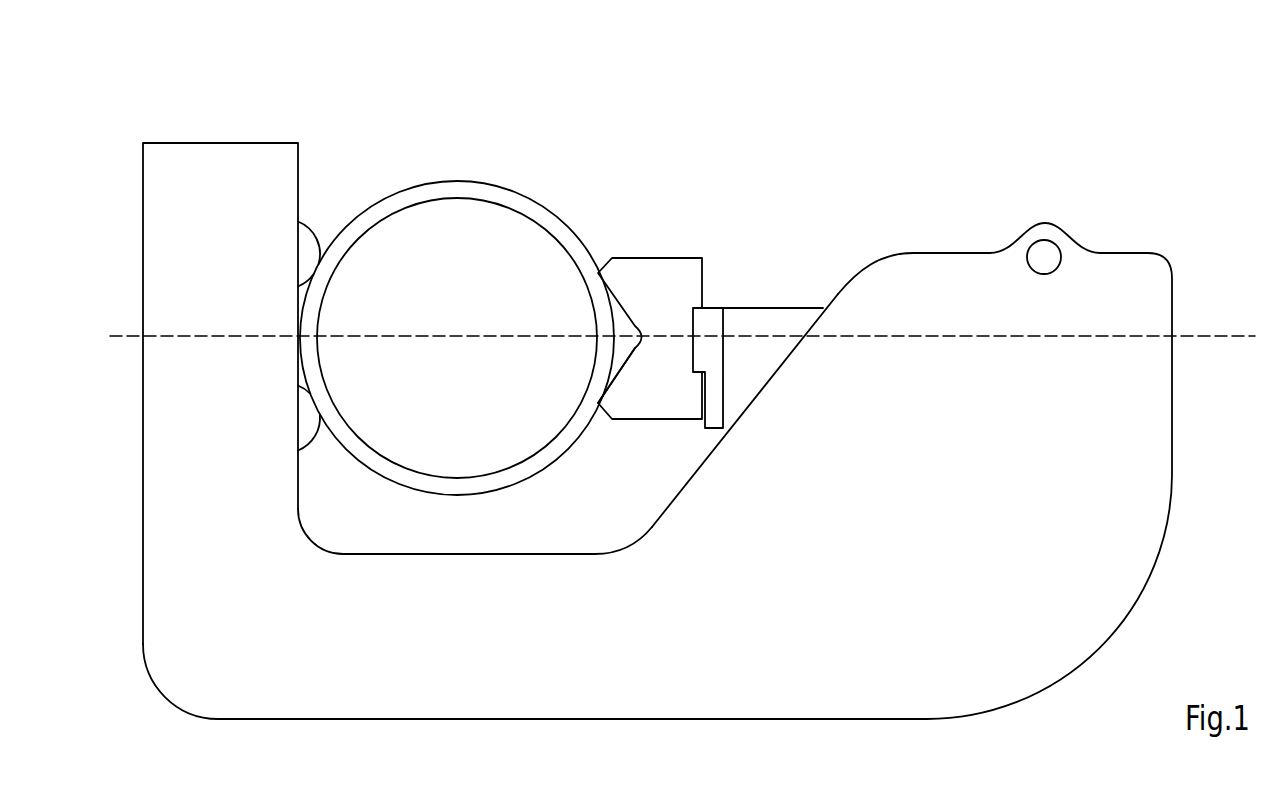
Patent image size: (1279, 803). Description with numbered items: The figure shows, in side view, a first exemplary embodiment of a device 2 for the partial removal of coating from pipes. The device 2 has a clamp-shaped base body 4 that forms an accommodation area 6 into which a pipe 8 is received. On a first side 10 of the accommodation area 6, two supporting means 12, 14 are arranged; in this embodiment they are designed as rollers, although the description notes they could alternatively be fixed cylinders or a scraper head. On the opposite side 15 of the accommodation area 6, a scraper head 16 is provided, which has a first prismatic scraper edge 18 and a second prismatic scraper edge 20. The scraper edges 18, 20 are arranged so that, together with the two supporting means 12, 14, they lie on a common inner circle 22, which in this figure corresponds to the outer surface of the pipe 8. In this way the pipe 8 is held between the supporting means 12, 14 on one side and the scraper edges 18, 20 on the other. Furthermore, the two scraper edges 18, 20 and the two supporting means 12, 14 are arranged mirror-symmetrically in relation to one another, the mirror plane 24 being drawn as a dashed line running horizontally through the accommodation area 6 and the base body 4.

The device 2 is at (934, 109).
The clamp-shaped base body 4 is at (1137, 542).
The accommodation area 6 is at (575, 141).
The pipe 8 is at (414, 195).
The first side 10 is at (300, 160).
The supporting means 12 is at (312, 223).
The supporting means 14 is at (311, 448).
The opposite side 15 is at (830, 304).
The scraper head 16 is at (677, 258).
The first prismatic scraper edge 18 is at (599, 272).
The second prismatic scraper edge 20 is at (599, 407).
The common inner circle 22 is at (496, 181).
The mirror plane 24 is at (1228, 340).